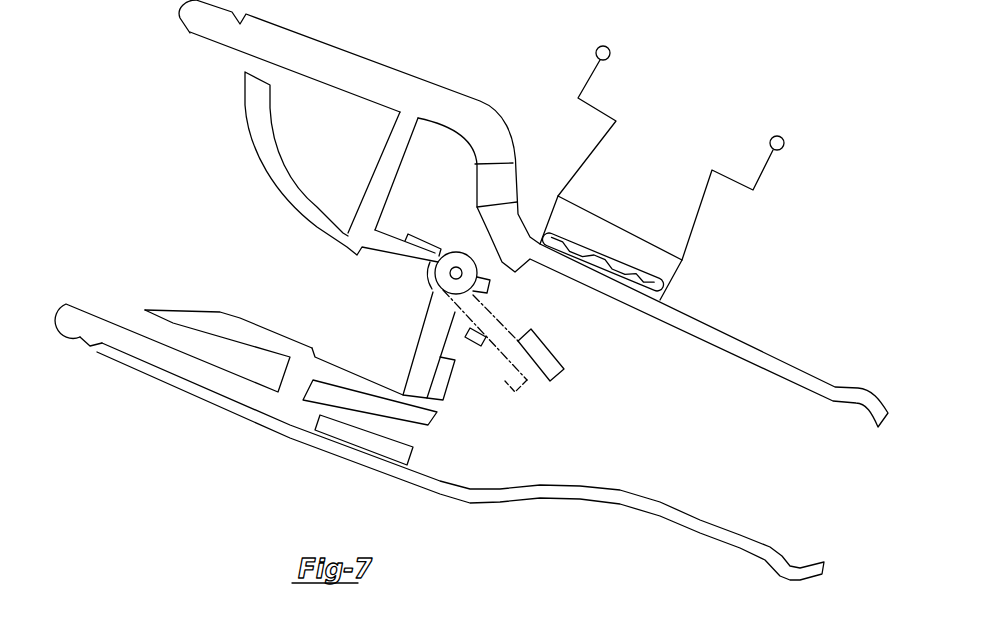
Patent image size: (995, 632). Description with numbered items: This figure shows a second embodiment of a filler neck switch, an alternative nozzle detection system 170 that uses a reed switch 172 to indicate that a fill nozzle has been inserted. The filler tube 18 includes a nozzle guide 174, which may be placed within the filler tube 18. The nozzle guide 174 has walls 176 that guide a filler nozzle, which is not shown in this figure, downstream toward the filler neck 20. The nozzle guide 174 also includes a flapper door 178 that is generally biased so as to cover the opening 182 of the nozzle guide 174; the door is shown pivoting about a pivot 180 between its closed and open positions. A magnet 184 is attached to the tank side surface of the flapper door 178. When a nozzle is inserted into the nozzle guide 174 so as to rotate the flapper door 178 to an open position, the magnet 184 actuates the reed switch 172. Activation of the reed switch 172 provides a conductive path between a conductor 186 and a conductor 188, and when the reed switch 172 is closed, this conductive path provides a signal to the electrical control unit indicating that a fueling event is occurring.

The filler tube 18 is at (169, 384).
The filler neck 20 is at (600, 498).
The nozzle detection system 170 is at (523, 59).
The reed switch 172 is at (672, 122).
The nozzle guide 174 is at (190, 32).
The walls 176 is at (243, 122).
The flapper door 178 is at (425, 323).
The pivot 180 is at (443, 283).
The opening 182 is at (377, 382).
The magnet 184 is at (560, 368).
The conductor 186 is at (594, 162).
The conductor 188 is at (694, 210).